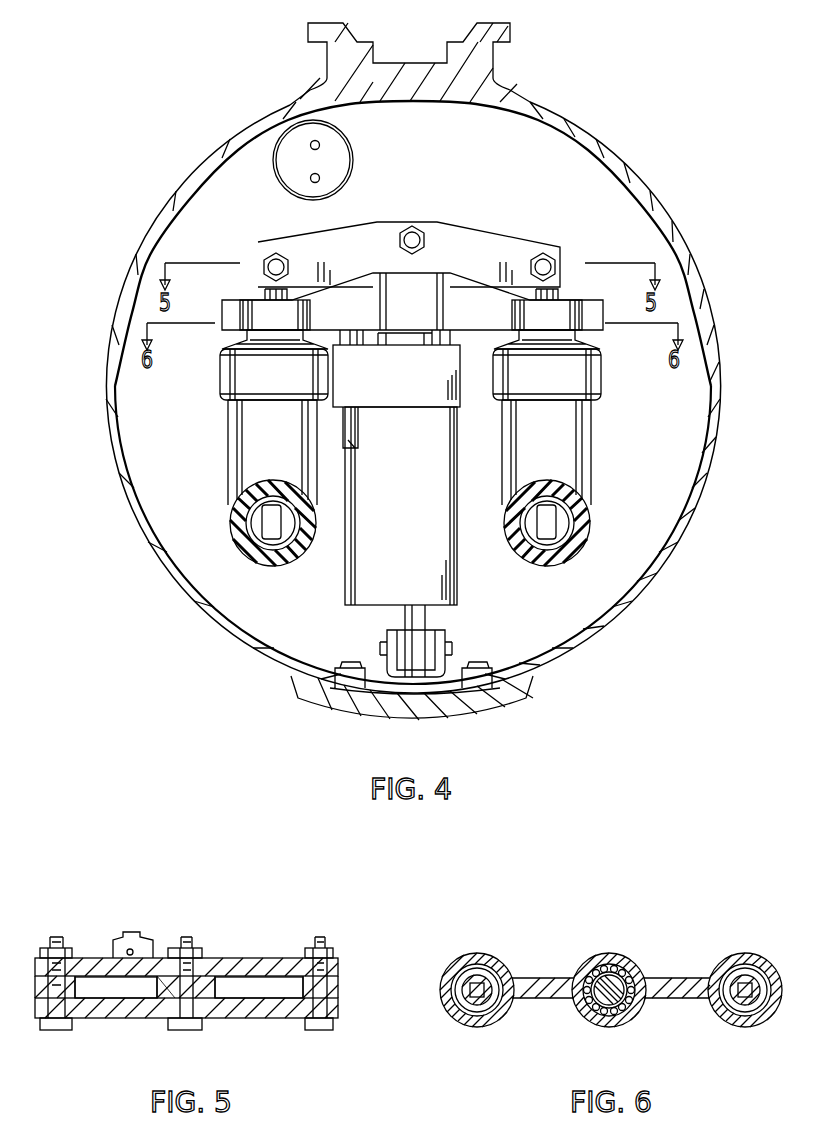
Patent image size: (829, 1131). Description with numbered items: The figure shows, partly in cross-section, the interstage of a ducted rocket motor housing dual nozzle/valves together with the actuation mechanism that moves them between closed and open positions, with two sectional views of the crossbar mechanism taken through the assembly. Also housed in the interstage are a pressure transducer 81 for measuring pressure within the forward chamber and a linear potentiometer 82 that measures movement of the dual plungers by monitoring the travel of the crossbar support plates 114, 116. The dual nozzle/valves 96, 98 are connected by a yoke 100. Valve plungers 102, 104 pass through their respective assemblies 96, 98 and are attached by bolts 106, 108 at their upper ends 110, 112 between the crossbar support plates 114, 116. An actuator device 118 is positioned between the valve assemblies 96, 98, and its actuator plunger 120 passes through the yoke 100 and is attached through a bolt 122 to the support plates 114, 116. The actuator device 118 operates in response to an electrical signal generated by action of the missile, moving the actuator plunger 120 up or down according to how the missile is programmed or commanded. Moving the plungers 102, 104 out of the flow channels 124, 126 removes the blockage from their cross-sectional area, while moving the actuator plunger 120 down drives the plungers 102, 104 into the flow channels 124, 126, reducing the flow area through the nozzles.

In FIG. 4, the pressure transducer 81 is at (292, 145).
In FIG. 4, the linear potentiometer 82 is at (350, 450).
In FIG. 5, the linear potentiometer 82 is at (133, 950).
In FIG. 4, the nozzle/valve 96 is at (238, 449).
In FIG. 4, the nozzle/valve 98 is at (585, 449).
In FIG. 4, the yoke 100 is at (262, 315).
In FIG. 6, the yoke 100 is at (537, 985).
In FIG. 4, the valve plunger 102 is at (270, 545).
In FIG. 6, the valve plunger 102 is at (481, 984).
In FIG. 4, the valve plunger 104 is at (555, 545).
In FIG. 6, the valve plunger 104 is at (743, 983).
In FIG. 4, the bolt 106 is at (270, 262).
In FIG. 5, the bolt 106 is at (55, 1028).
In FIG. 4, the bolt 108 is at (548, 262).
In FIG. 5, the bolt 108 is at (320, 1026).
In FIG. 4, the upper end of valve plunger 110 is at (265, 296).
In FIG. 5, the upper end of valve plunger 110 is at (70, 975).
In FIG. 4, the upper end of valve plunger 112 is at (556, 296).
In FIG. 5, the upper end of valve plunger 112 is at (340, 980).
In FIG. 5, the crossbar support plate 114 is at (245, 1016).
In FIG. 5, the crossbar support plate 116 is at (246, 964).
In FIG. 4, the actuator device 118 is at (436, 572).
In FIG. 4, the actuator plunger 120 is at (418, 343).
In FIG. 6, the actuator plunger 120 is at (607, 983).
In FIG. 4, the bolt 122 is at (414, 237).
In FIG. 5, the bolt 122 is at (192, 940).
In FIG. 4, the flow channel 124 is at (250, 525).
In FIG. 4, the flow channel 126 is at (565, 525).